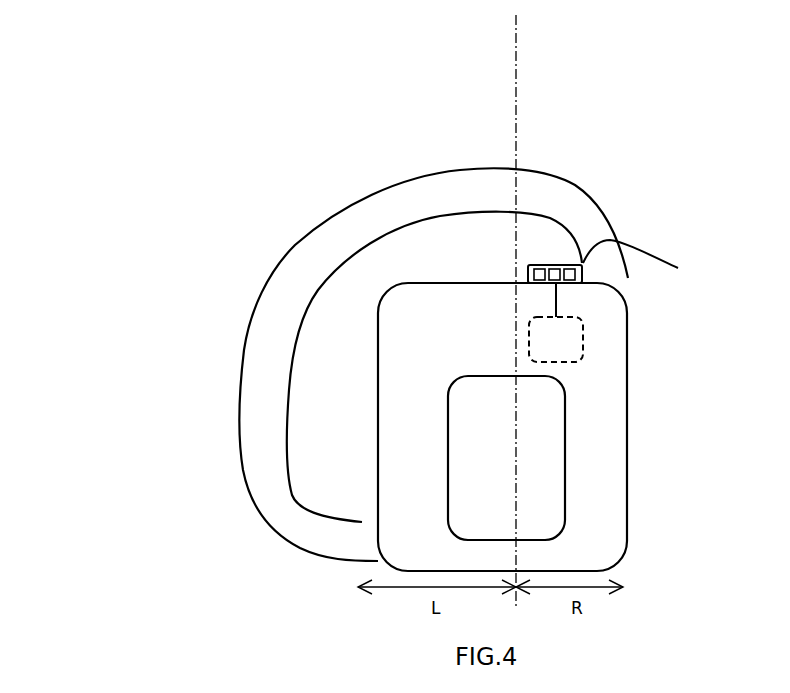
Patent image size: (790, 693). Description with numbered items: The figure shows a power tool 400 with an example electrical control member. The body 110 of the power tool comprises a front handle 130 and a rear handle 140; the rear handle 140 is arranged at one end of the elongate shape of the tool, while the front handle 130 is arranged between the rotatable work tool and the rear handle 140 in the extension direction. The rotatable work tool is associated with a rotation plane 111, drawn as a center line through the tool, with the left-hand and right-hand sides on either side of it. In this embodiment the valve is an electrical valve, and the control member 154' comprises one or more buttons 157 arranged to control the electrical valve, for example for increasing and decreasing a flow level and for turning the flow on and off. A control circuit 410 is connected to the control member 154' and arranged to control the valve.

The power tool with control member 400 is at (128, 88).
The rotation plane 111 is at (515, 33).
The front handle 130 is at (450, 188).
The body 110 is at (460, 343).
The rear handle 140 is at (503, 468).
The buttons 157 is at (530, 258).
The control circuit 410 is at (556, 322).
The control member 154' is at (650, 268).